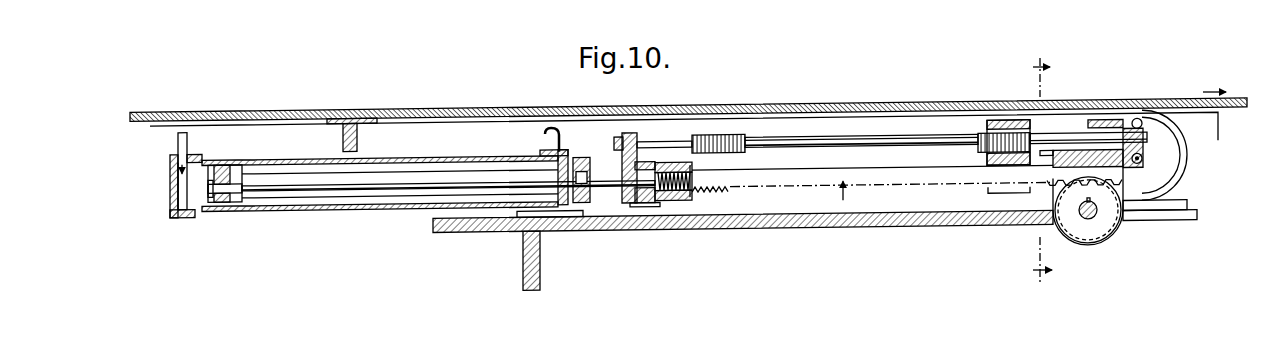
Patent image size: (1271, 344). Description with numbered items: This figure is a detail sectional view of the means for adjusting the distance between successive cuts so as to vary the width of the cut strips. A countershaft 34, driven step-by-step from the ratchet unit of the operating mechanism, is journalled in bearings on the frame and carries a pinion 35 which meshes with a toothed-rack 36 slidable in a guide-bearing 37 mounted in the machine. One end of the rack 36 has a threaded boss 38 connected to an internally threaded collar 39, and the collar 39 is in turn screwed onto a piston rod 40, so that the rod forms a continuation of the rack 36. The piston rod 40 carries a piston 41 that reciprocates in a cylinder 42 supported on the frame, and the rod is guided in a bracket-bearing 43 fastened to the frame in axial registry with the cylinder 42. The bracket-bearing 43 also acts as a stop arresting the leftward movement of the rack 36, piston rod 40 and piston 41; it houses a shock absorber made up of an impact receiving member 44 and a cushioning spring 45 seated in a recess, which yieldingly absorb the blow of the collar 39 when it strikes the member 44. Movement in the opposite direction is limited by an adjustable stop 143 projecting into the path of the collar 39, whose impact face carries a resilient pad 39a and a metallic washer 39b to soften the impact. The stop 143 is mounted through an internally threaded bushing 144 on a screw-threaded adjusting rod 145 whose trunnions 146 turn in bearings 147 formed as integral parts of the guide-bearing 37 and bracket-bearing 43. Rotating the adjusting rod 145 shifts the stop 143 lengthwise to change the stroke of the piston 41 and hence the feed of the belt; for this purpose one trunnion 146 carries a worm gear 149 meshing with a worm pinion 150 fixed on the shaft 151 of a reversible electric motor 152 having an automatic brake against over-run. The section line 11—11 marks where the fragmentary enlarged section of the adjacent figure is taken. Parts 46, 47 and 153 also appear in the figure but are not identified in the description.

The section line 11— 11 is at (1042, 170).
The countershaft 34 is at (1088, 214).
The pinion 35 is at (1110, 230).
The toothed-rack 36 is at (856, 196).
The guide-bearing 37 is at (1071, 157).
The threaded boss 38 is at (671, 203).
The internally threaded collar 39 is at (675, 203).
The pad 39a is at (686, 203).
The metallic washer 39b is at (694, 196).
The piston rod 40 is at (392, 184).
The piston 41 is at (228, 201).
The cylinder 42 is at (309, 207).
The bracket-bearing 43 is at (620, 162).
The impact receiving member 44 is at (648, 205).
The cushioning spring 45 is at (632, 207).
The end wall 46 is at (189, 138).
The hook 47 is at (546, 142).
The adjustable stop 143 is at (993, 168).
The internally threaded bushing 144 is at (984, 156).
The screw-threaded adjusting rod 145 is at (883, 140).
The trunnions 146 is at (666, 141).
The bearings 147 is at (621, 137).
The worm gear 149 is at (1148, 123).
The worm pinion 150 is at (1143, 163).
The shaft 151 is at (1141, 160).
The reversible electric motor 152 is at (1160, 153).
The nut flange 153 is at (984, 123).